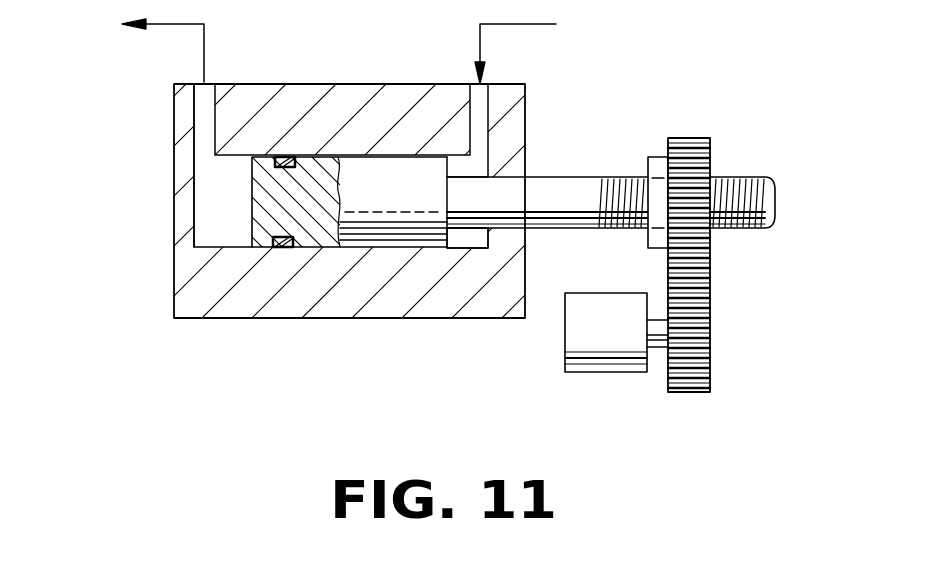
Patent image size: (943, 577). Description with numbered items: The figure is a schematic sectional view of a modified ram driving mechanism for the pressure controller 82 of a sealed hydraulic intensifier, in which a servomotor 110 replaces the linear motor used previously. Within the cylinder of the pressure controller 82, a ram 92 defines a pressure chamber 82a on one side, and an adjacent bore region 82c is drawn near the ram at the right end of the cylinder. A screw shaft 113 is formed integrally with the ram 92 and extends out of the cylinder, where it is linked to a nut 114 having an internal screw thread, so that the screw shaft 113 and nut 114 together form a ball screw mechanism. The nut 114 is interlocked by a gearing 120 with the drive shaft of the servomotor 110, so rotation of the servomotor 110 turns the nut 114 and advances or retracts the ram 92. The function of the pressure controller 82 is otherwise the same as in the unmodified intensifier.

The pressure controller 82 is at (527, 90).
The pressure chamber 82a is at (207, 185).
The bore 82c is at (474, 242).
The ram 92 is at (372, 250).
The screw shaft 113 is at (548, 188).
The nut 114 is at (653, 157).
The gearing 120 is at (715, 300).
The servomotor 110 is at (603, 358).